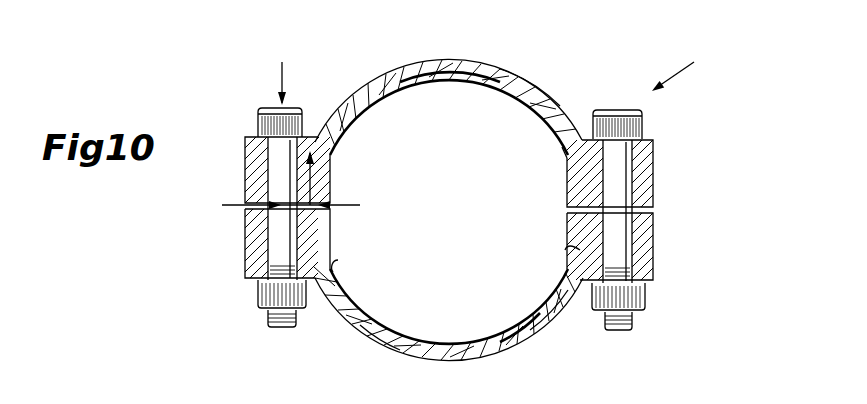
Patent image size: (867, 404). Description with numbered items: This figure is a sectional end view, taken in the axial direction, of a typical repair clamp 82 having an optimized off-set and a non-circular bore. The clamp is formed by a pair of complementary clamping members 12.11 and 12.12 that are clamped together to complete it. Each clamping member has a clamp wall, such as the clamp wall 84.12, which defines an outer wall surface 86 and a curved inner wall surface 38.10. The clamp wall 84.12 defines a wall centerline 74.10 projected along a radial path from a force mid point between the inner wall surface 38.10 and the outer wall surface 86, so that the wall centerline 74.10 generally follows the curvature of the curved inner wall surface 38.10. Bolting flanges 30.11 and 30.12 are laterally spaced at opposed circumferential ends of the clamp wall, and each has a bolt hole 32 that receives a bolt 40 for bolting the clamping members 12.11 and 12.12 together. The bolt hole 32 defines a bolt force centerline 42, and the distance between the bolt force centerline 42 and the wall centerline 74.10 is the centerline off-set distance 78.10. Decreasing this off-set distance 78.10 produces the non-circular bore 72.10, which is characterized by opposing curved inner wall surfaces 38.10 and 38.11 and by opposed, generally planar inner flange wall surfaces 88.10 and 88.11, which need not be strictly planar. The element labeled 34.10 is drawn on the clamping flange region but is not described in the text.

The bolt force centerline 42 is at (284, 78).
The bolt 40 is at (258, 118).
The clamping block 34.10 is at (248, 208).
The centerline off-set distance 78.10 is at (358, 205).
The non-circular bore 72.10 is at (452, 207).
The curved inner wall surface 38.11 is at (436, 81).
The wall centerline 74.10 is at (493, 72).
The clamping member 12.11 is at (545, 100).
The clamp 82 is at (687, 70).
The bolting flange 30.11 is at (652, 178).
The bolting flange 30.12 is at (653, 230).
The bolt hole 32 is at (622, 255).
The inner flange wall surface 88.11 is at (580, 250).
The clamping member 12.12 is at (567, 307).
The curved inner wall surface 38.10 is at (506, 333).
The clamp wall 84.12 is at (446, 347).
The outer wall surface 86 is at (383, 339).
The inner flange wall surface 88.10 is at (338, 260).